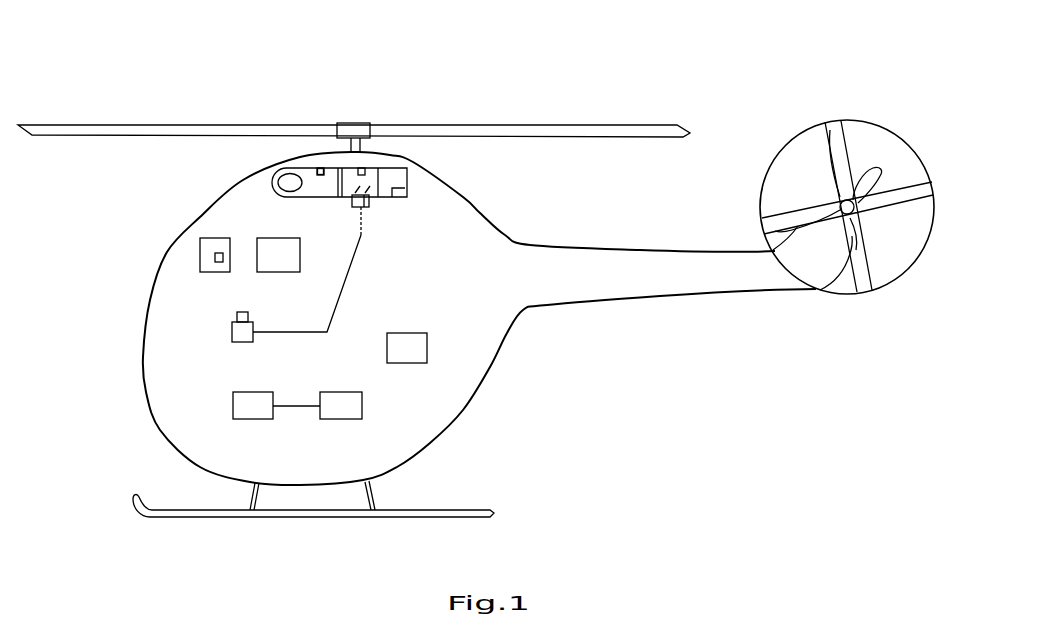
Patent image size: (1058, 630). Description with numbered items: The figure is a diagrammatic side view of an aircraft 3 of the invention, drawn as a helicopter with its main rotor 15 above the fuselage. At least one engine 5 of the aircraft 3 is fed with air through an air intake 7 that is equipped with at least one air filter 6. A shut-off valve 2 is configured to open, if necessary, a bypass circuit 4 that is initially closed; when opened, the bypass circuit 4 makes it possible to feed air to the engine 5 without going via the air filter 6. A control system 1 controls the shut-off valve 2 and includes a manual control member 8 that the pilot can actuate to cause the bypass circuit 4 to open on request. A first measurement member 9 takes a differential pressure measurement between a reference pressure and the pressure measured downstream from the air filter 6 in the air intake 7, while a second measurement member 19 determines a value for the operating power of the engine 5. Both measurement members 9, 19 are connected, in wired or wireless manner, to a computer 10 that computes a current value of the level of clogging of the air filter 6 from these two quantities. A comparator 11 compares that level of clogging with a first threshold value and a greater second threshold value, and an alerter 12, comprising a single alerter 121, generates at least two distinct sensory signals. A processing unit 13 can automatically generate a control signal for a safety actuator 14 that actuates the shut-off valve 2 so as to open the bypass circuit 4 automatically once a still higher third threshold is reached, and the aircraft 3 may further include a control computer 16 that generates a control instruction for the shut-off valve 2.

The control system 1 is at (186, 300).
The shut-off valve 2 is at (365, 207).
The aircraft 3 is at (656, 318).
The bypass circuit 4 is at (372, 197).
The engine 5 is at (405, 180).
The air filter 6 is at (340, 183).
The air intake 7 is at (311, 168).
The manual control member 8 is at (222, 318).
The first measurement member 9 is at (363, 168).
The computer 10 is at (262, 237).
The comparator 11 is at (362, 405).
The alerter 12 is at (200, 248).
The single alerter 121 is at (215, 258).
The processing unit 13 is at (233, 405).
The safety actuator 14 is at (367, 198).
The main rotor 15 is at (442, 103).
The control computer 16 is at (427, 348).
The second measurement member 19 is at (405, 195).